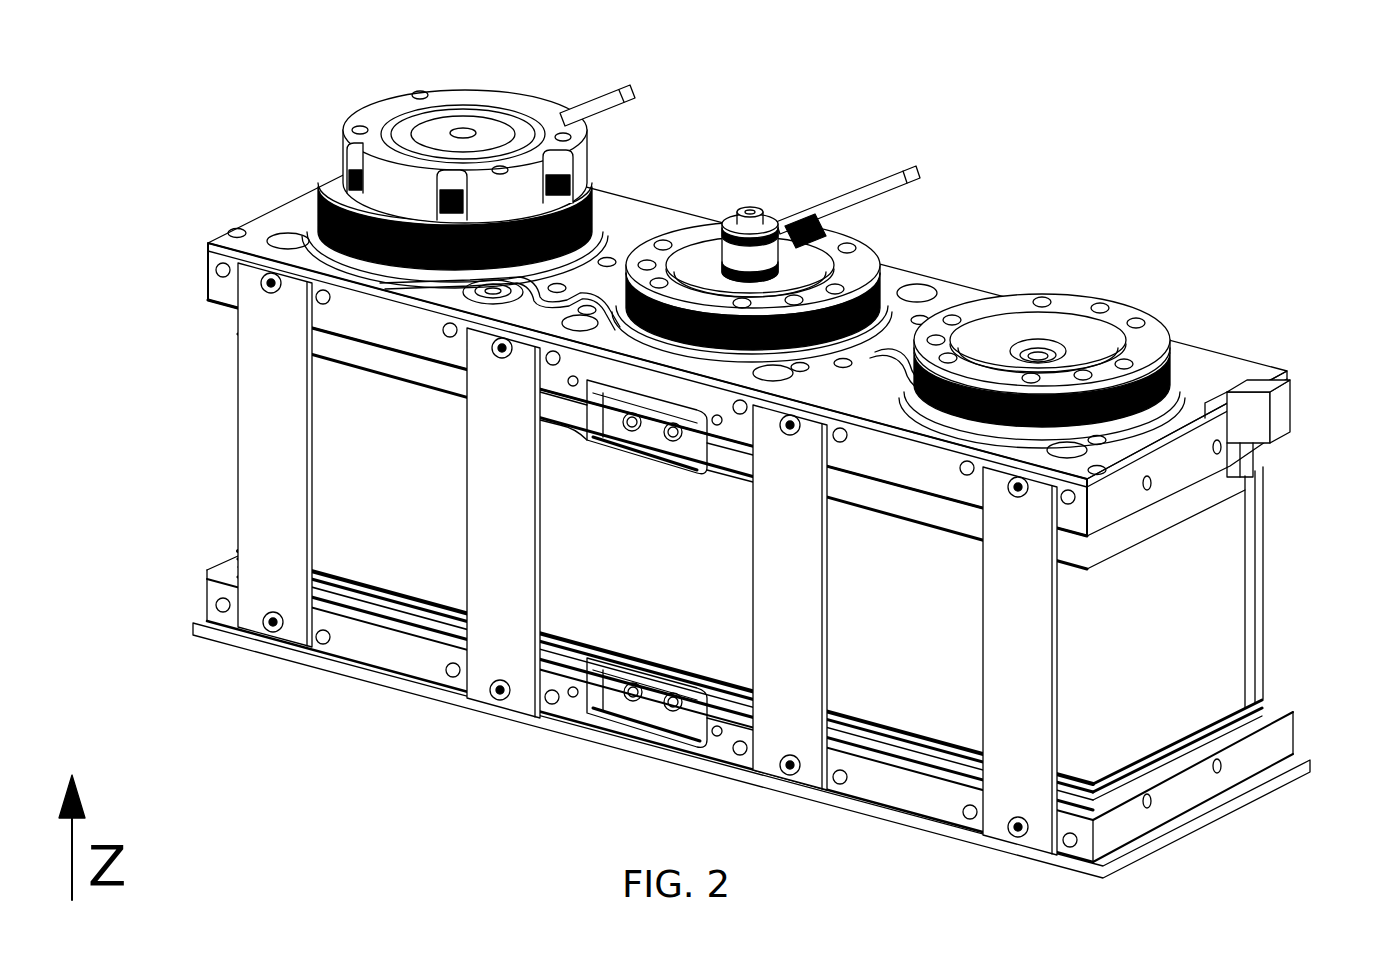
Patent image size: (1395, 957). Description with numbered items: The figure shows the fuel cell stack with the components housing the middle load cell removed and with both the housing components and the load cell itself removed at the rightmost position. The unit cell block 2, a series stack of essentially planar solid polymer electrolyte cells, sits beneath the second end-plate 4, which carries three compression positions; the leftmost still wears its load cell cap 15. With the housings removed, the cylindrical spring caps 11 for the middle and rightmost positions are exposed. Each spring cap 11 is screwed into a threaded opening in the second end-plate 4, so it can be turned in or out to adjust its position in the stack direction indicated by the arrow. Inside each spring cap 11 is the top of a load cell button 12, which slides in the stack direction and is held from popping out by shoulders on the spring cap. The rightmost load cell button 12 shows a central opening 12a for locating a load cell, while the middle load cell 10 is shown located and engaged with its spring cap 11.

The unit cell block 2 is at (1268, 473).
The second end-plate 4 is at (1283, 405).
The load cell 10 is at (821, 161).
The spring cap 11 is at (918, 271).
The load cell button 12 is at (898, 226).
The central opening 12a is at (1093, 271).
The load cell cap 15 is at (476, 142).